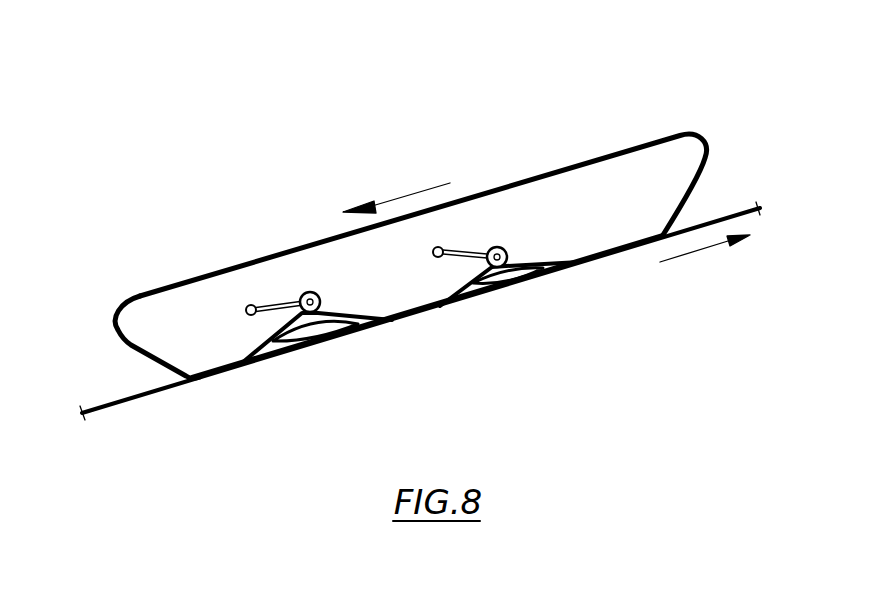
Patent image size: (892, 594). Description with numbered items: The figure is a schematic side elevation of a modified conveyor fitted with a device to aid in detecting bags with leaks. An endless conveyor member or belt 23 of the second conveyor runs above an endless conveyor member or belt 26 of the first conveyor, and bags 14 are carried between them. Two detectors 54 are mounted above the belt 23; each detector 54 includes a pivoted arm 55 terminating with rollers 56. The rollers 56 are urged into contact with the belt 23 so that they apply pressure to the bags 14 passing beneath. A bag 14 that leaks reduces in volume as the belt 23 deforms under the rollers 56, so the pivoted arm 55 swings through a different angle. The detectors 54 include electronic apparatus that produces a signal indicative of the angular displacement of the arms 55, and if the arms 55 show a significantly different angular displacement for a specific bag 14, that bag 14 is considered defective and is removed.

The bag 14 is at (350, 334).
The belt 23 is at (542, 176).
The belt 26 is at (543, 274).
The detector 54 is at (272, 262).
The pivoted arm 55 is at (262, 311).
The roller 56 is at (321, 296).